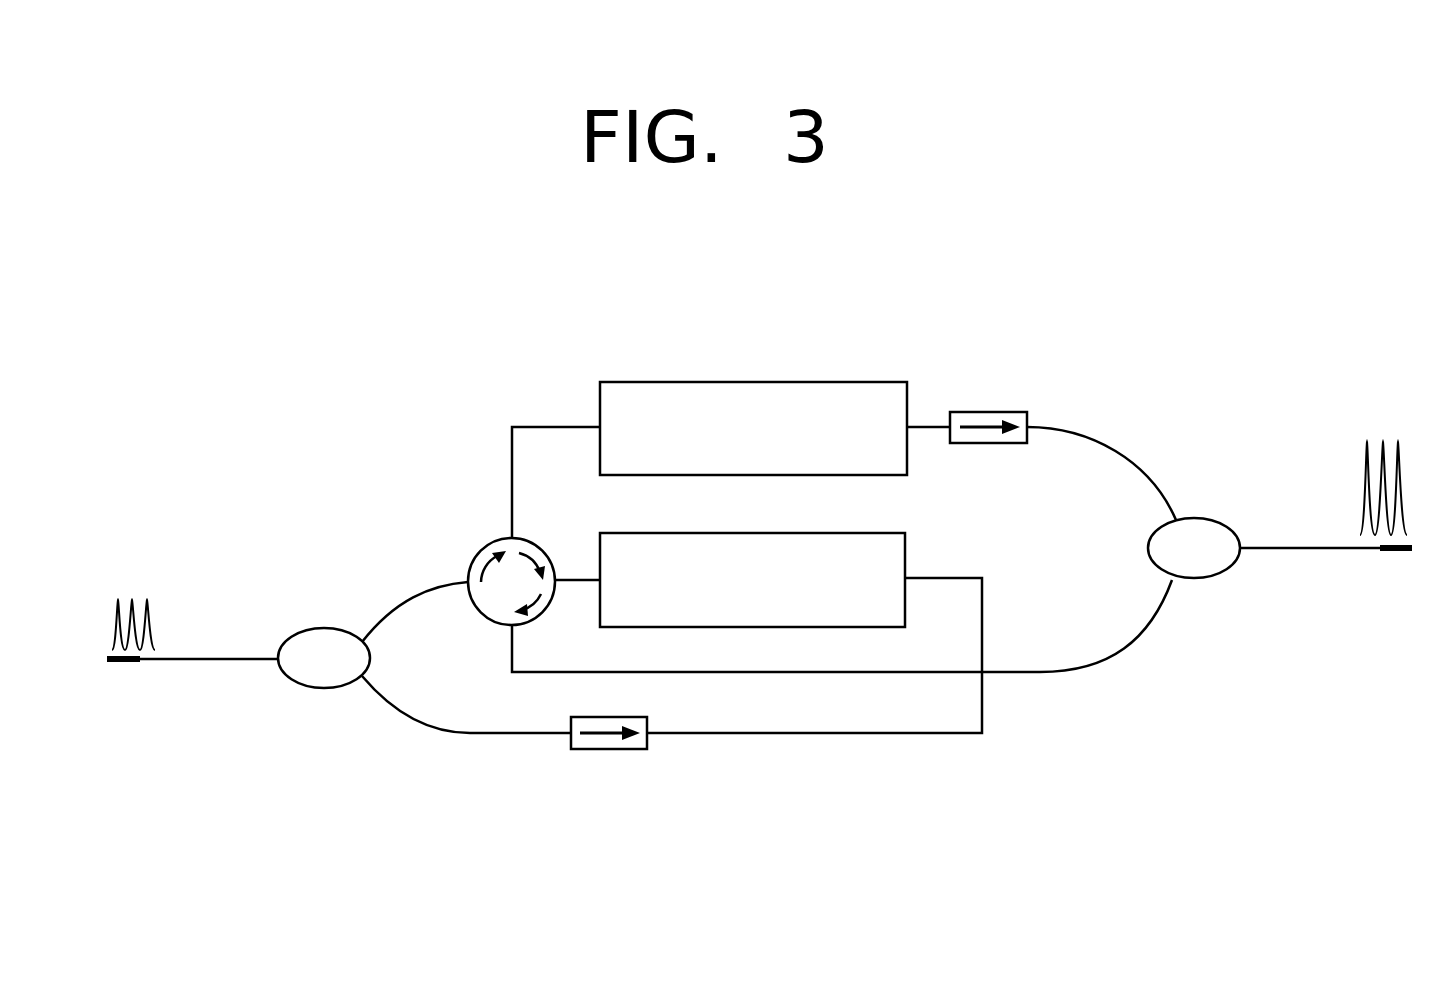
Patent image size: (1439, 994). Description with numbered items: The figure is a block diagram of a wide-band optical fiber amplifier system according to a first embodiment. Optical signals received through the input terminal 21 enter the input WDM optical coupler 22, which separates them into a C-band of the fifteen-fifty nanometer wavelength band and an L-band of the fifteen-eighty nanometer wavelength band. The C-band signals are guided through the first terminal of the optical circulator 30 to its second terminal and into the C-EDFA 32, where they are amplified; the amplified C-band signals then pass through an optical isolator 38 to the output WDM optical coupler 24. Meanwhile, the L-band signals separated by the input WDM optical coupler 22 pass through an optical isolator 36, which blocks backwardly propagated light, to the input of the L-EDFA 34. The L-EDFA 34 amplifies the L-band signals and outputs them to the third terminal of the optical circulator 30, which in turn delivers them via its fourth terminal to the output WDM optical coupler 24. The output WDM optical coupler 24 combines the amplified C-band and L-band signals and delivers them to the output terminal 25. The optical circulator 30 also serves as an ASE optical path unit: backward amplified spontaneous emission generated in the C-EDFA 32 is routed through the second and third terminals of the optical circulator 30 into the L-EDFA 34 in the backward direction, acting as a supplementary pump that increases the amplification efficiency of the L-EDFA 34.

The input terminal 21 is at (127, 661).
The input WDM optical coupler 22 is at (298, 631).
The output WDM optical coupler 24 is at (1211, 521).
The output terminal 25 is at (1395, 552).
The optical circulator 30 is at (484, 550).
The C-EDFA 32 is at (750, 381).
The L-EDFA 34 is at (750, 532).
The optical isolator 36 is at (602, 750).
The optical isolator 38 is at (980, 411).